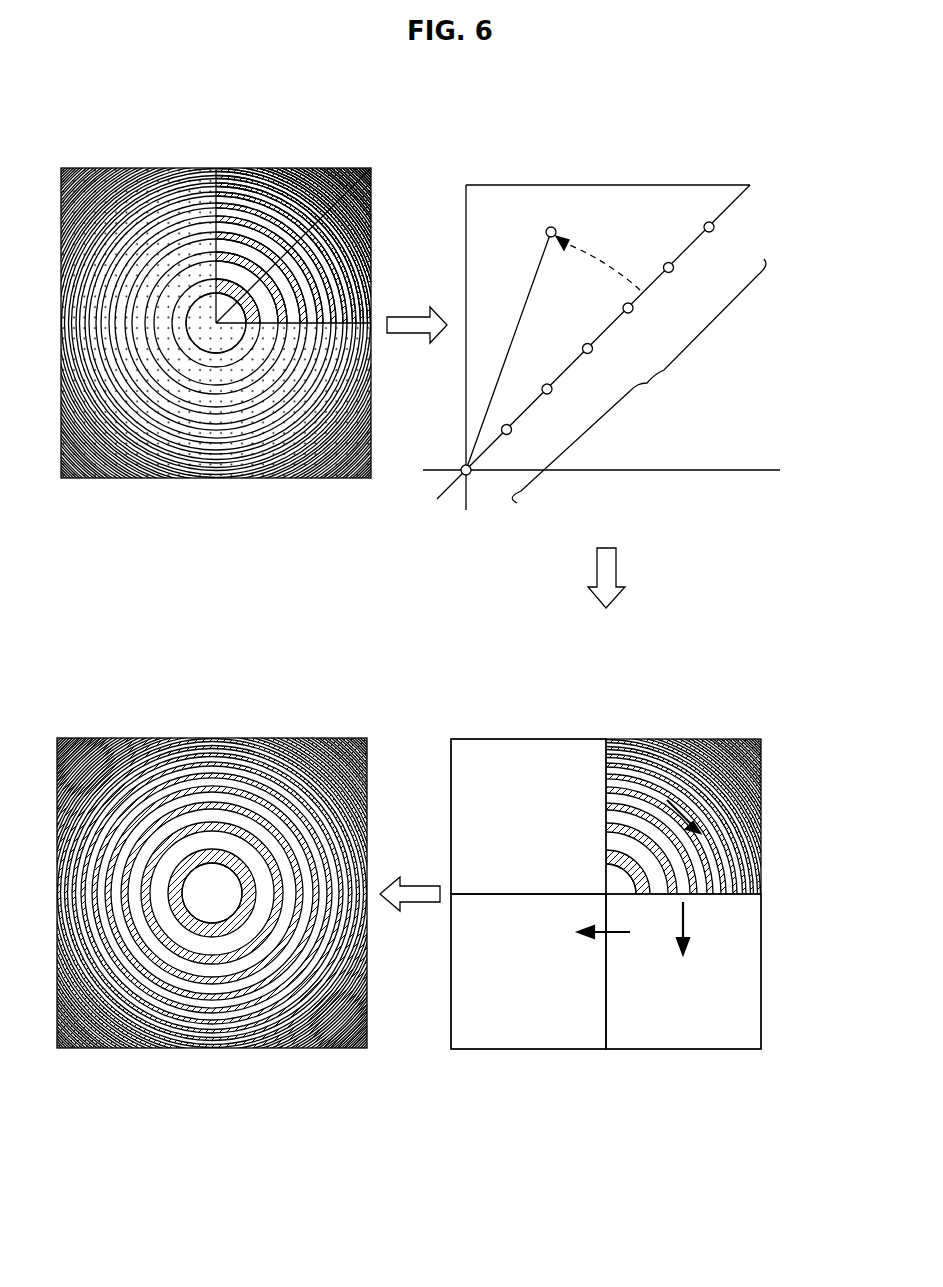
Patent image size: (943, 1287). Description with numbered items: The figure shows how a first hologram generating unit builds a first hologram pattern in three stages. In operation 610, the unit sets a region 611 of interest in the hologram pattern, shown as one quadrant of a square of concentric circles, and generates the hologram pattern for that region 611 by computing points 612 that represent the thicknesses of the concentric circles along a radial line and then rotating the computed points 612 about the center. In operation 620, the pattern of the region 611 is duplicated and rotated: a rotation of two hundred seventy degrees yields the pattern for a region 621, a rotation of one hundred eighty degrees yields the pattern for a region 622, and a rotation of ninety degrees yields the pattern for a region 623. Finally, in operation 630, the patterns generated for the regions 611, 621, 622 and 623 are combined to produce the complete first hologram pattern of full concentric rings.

The operation of setting a region of interest 610 is at (187, 125).
The region of interest 611 is at (635, 127).
The points 612 is at (639, 381).
The duplicating operation 620 is at (577, 697).
The region 621 is at (678, 1027).
The region 622 is at (522, 1027).
The region 623 is at (504, 761).
The combining operation 630 is at (186, 695).